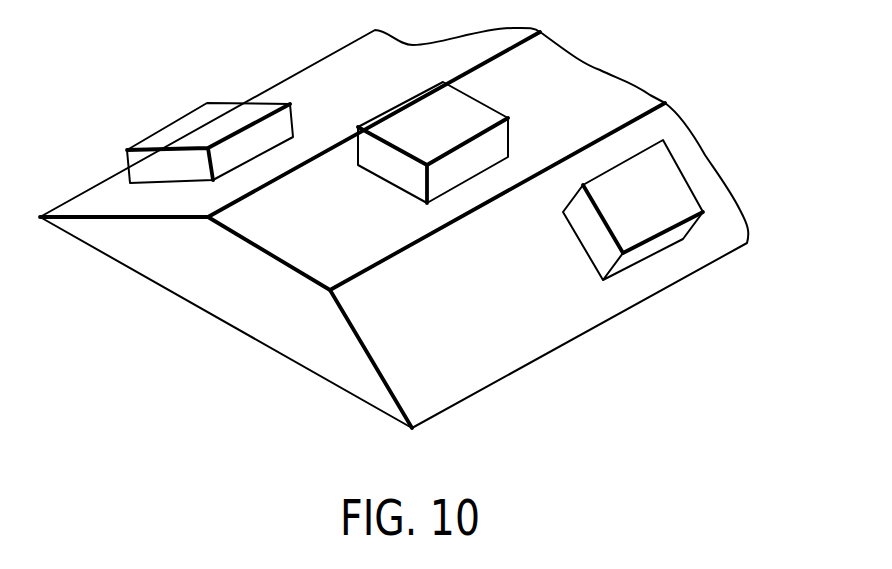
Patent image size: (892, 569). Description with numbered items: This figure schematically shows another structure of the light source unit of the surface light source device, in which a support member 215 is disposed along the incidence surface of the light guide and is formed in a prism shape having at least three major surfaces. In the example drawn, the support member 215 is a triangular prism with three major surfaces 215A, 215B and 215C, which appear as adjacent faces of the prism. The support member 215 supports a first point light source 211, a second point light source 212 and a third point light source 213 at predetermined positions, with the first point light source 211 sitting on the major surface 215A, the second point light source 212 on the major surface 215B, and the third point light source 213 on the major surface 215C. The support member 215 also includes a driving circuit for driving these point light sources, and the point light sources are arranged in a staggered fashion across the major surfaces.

The first point light source 211 is at (213, 117).
The second point light source 212 is at (507, 100).
The third point light source 213 is at (673, 187).
The support member 215 is at (228, 323).
The major surface 215A is at (90, 198).
The major surface 215B is at (353, 242).
The major surface 215C is at (493, 372).